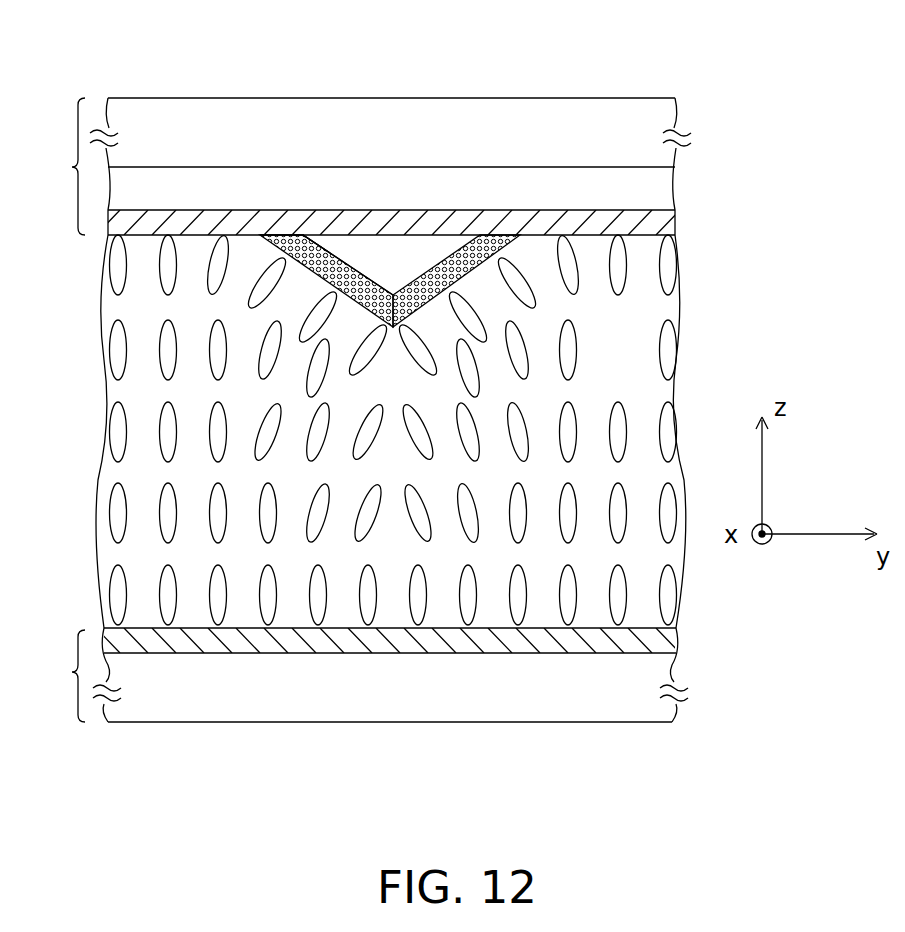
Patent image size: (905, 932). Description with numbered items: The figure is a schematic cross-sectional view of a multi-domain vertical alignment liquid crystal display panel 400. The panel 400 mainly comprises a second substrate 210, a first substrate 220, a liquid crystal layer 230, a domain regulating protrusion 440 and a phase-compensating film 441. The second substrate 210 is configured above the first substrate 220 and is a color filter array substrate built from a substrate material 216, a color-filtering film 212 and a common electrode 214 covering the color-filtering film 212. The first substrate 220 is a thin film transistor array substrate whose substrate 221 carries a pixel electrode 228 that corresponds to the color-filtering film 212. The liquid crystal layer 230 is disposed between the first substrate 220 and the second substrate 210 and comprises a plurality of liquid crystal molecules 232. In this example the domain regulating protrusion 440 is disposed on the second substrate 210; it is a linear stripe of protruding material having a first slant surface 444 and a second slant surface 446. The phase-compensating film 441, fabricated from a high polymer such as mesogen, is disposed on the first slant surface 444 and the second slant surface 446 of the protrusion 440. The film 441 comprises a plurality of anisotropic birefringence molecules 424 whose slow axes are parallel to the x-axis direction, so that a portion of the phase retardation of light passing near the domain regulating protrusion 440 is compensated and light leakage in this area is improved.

The second substrate 210 is at (394, 161).
The substrate material 216 is at (660, 117).
The color-filtering film 212 is at (660, 186).
The common electrode 214 is at (660, 224).
The first substrate 220 is at (395, 672).
The pixel electrode 228 is at (655, 648).
The substrate 221 is at (660, 712).
The liquid crystal layer 230 is at (108, 392).
The liquid crystal molecule 232 is at (663, 352).
The domain regulating protrusion 440 is at (392, 170).
The first slant surface 444 is at (344, 258).
The second slant surface 446 is at (447, 258).
The anisotropic birefringence molecule 424 is at (280, 248).
The phase-compensating film 441 is at (325, 273).
The MVA liquid crystal display panel 400 is at (751, 810).